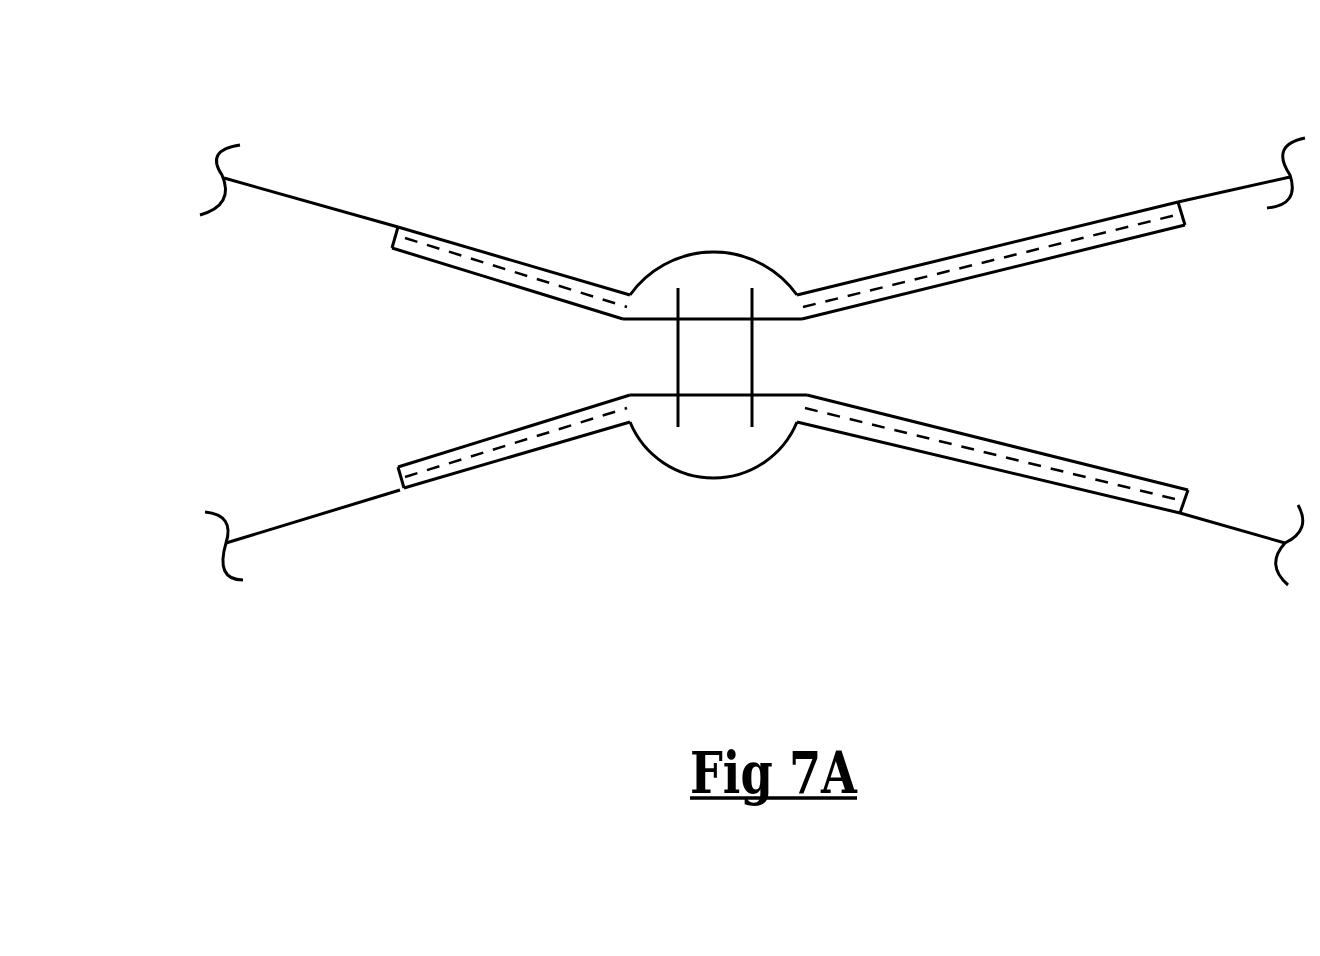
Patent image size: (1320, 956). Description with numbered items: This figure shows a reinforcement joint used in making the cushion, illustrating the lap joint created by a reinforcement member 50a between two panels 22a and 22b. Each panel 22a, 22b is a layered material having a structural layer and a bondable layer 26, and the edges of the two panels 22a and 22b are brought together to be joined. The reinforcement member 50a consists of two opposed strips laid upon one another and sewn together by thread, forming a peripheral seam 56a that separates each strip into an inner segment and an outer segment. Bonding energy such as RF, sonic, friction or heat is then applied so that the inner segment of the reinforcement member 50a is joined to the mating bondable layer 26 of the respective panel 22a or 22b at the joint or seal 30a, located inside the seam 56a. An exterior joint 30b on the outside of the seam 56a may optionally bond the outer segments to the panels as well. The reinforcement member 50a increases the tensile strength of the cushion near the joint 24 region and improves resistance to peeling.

The panel 22a is at (300, 181).
The panel 22b is at (276, 547).
The wire end / tube junction 24 is at (355, 210).
The bondable layer 26 is at (472, 258).
The joint or seal 30a is at (977, 260).
The exterior joint 30b is at (552, 277).
The reinforcement member 50a is at (843, 372).
The peripheral seam 56a is at (680, 334).